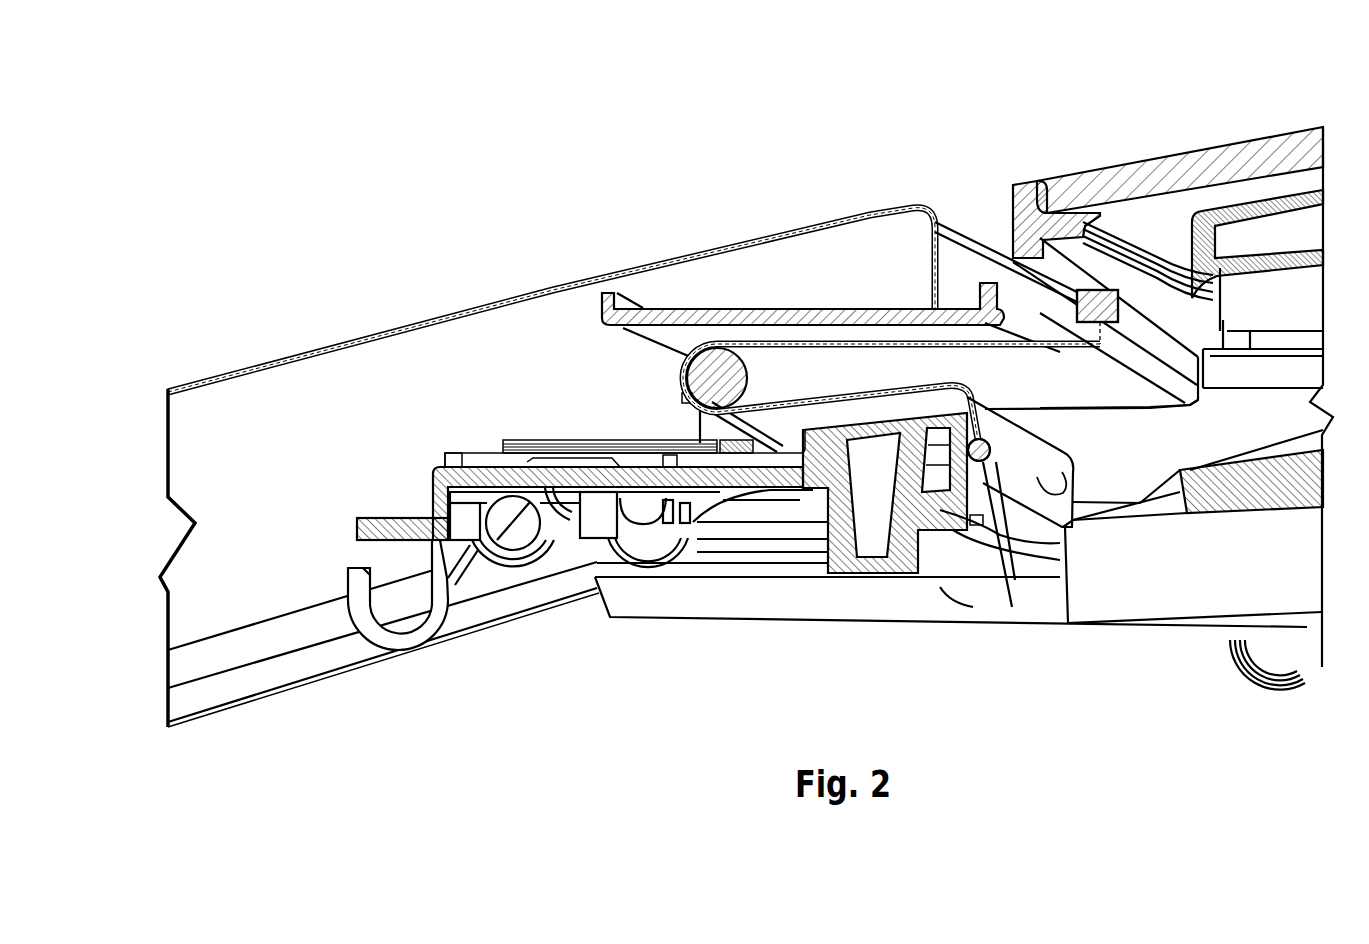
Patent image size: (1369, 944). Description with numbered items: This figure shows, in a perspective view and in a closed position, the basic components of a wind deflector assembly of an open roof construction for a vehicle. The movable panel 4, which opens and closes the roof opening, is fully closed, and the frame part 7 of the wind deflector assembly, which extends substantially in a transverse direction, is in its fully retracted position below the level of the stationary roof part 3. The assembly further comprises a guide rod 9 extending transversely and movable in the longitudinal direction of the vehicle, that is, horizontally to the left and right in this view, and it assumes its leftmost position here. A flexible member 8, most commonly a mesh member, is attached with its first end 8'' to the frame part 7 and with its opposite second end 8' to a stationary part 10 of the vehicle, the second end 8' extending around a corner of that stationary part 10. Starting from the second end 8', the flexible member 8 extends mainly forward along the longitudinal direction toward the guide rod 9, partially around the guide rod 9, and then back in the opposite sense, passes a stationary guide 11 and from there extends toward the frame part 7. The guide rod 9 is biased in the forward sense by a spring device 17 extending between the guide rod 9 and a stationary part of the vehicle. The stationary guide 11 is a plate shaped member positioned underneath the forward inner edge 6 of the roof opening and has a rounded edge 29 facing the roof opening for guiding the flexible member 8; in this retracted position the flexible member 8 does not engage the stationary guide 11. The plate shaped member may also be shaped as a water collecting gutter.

The stationary roof part 3 is at (403, 326).
The movable panel 4 is at (1150, 170).
The forward edge 6 is at (950, 270).
The frame part 7 is at (1078, 285).
The flexible member 8 is at (891, 292).
The second end 8' is at (1006, 547).
The first end 8'' is at (1168, 305).
The guide rod 9 is at (752, 392).
The stationary part 10 is at (953, 507).
The stationary guide 11 is at (863, 317).
The spring device 17 is at (767, 450).
The rounded edge 29 is at (985, 325).